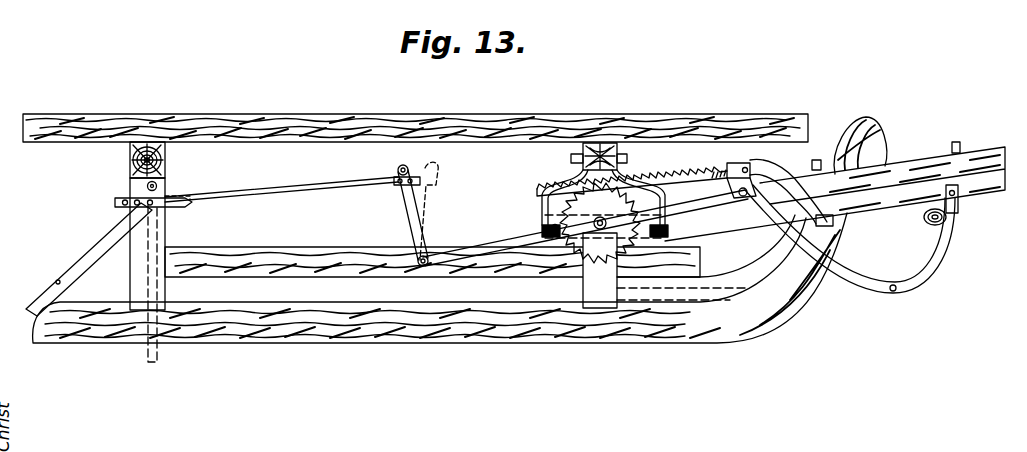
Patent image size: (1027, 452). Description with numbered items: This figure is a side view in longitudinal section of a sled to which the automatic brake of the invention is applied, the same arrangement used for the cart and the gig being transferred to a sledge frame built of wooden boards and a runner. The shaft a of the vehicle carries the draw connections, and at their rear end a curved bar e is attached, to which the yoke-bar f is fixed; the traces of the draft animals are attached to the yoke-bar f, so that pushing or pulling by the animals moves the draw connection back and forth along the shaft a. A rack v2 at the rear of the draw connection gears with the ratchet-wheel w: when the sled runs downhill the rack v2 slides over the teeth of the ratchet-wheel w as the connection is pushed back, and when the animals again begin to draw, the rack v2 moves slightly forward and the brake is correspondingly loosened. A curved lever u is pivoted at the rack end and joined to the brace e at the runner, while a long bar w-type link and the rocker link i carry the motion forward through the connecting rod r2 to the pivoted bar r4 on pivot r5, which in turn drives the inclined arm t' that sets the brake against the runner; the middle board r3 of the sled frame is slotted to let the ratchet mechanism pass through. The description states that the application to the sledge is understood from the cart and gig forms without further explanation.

The connecting rod r2 is at (297, 190).
The middle board r3 is at (432, 252).
The pivoted bar r4 is at (140, 208).
The pivot pin r5 is at (156, 196).
The inclined lever arm t' is at (89, 259).
The rocker link i is at (410, 214).
The rack v2 is at (545, 188).
The ratchet-wheel w is at (636, 245).
The curved lever u is at (770, 168).
The shaft a is at (880, 165).
The yoke-bar f is at (928, 226).
The curved bar e is at (937, 265).